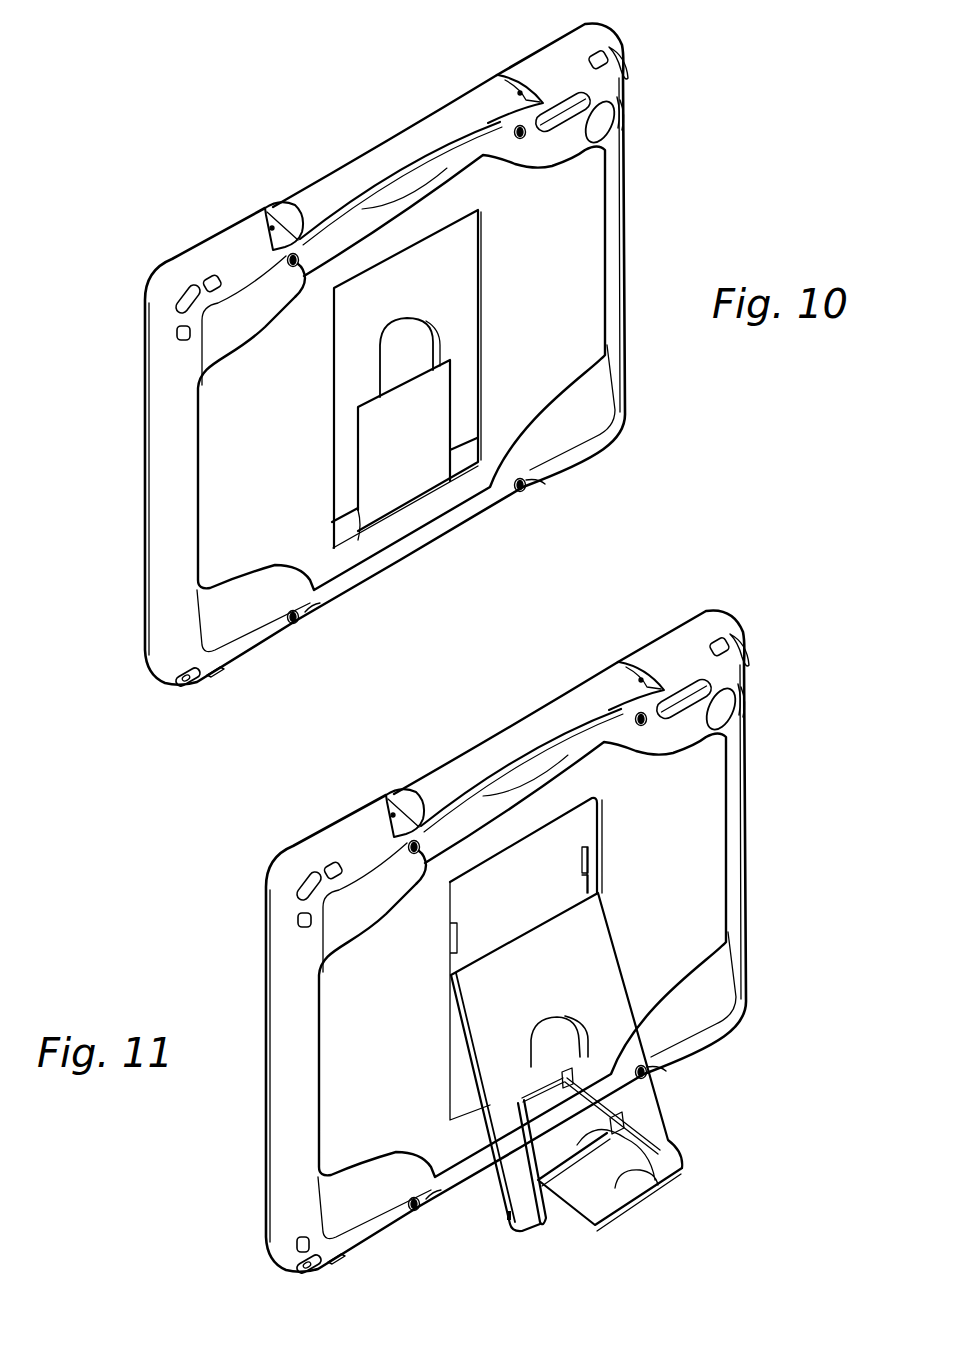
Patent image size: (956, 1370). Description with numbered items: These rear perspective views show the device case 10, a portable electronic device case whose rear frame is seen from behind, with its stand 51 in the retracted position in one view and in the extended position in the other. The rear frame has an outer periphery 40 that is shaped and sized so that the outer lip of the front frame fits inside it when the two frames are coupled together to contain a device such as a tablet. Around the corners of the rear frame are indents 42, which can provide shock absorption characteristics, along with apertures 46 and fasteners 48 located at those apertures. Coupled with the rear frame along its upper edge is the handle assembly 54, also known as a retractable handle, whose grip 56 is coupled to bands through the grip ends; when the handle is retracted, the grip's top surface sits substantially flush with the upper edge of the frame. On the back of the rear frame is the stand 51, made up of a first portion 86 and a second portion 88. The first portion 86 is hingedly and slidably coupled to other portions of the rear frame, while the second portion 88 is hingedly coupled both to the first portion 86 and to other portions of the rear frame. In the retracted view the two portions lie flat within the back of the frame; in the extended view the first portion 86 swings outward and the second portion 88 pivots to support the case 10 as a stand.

In FIG. 10, the device case 10 is at (373, 377).
In FIG. 11, the device case 10 is at (449, 942).
In FIG. 10, the outer periphery 40 is at (419, 377).
In FIG. 11, the outer periphery 40 is at (544, 942).
In FIG. 10, the indents 42 is at (630, 47).
In FIG. 10, the apertures 46 is at (290, 205).
In FIG. 10, the fasteners 48 is at (304, 282).
In FIG. 10, the stand 51 is at (424, 379).
In FIG. 11, the stand 51 is at (626, 1016).
In FIG. 10, the handle assembly 54 is at (387, 144).
In FIG. 11, the handle assembly 54 is at (508, 730).
In FIG. 10, the grip 56 is at (416, 137).
In FIG. 11, the grip 56 is at (548, 722).
In FIG. 10, the first portion 86 is at (343, 390).
In FIG. 11, the first portion 86 is at (667, 1110).
In FIG. 10, the second portion 88 is at (373, 458).
In FIG. 11, the second portion 88 is at (690, 1165).